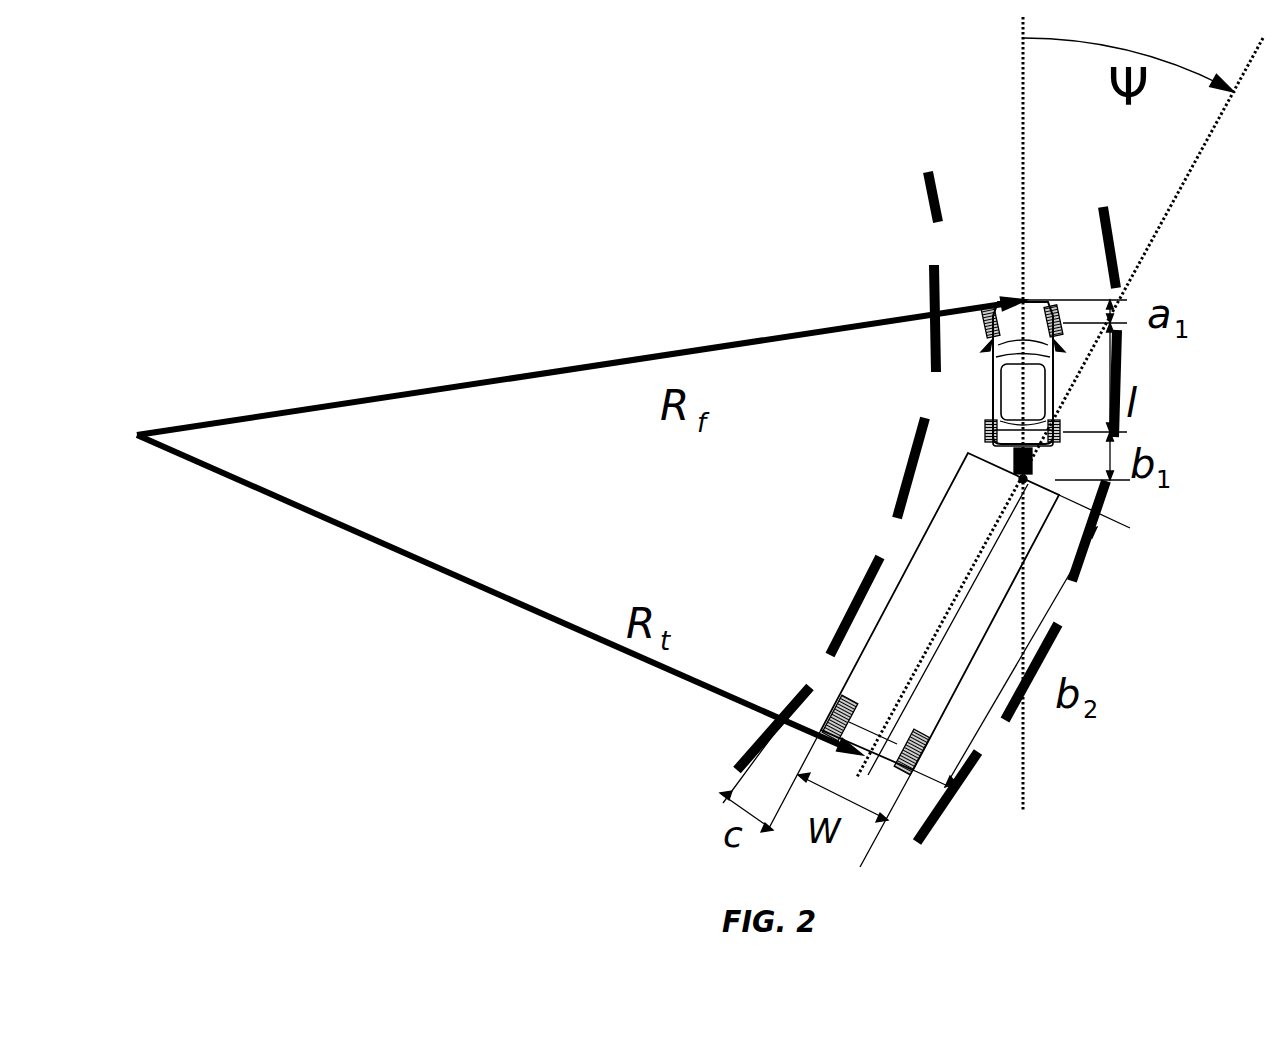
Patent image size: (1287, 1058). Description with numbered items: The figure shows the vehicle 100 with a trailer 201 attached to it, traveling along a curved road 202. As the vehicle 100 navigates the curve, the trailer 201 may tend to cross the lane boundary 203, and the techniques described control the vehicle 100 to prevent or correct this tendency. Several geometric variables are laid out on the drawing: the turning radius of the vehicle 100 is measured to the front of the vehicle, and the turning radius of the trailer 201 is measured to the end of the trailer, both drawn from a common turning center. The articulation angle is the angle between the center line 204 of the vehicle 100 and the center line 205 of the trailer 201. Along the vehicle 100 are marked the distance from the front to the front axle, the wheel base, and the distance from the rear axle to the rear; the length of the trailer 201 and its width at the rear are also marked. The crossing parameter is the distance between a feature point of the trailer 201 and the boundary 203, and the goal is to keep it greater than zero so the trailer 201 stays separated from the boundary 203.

The vehicle 100 is at (1034, 298).
The trailer 201 is at (910, 567).
The road 202 is at (950, 165).
The lane boundary 203 is at (917, 447).
The center line of the vehicle 204 is at (1020, 82).
The center line of the trailer 205 is at (1192, 175).